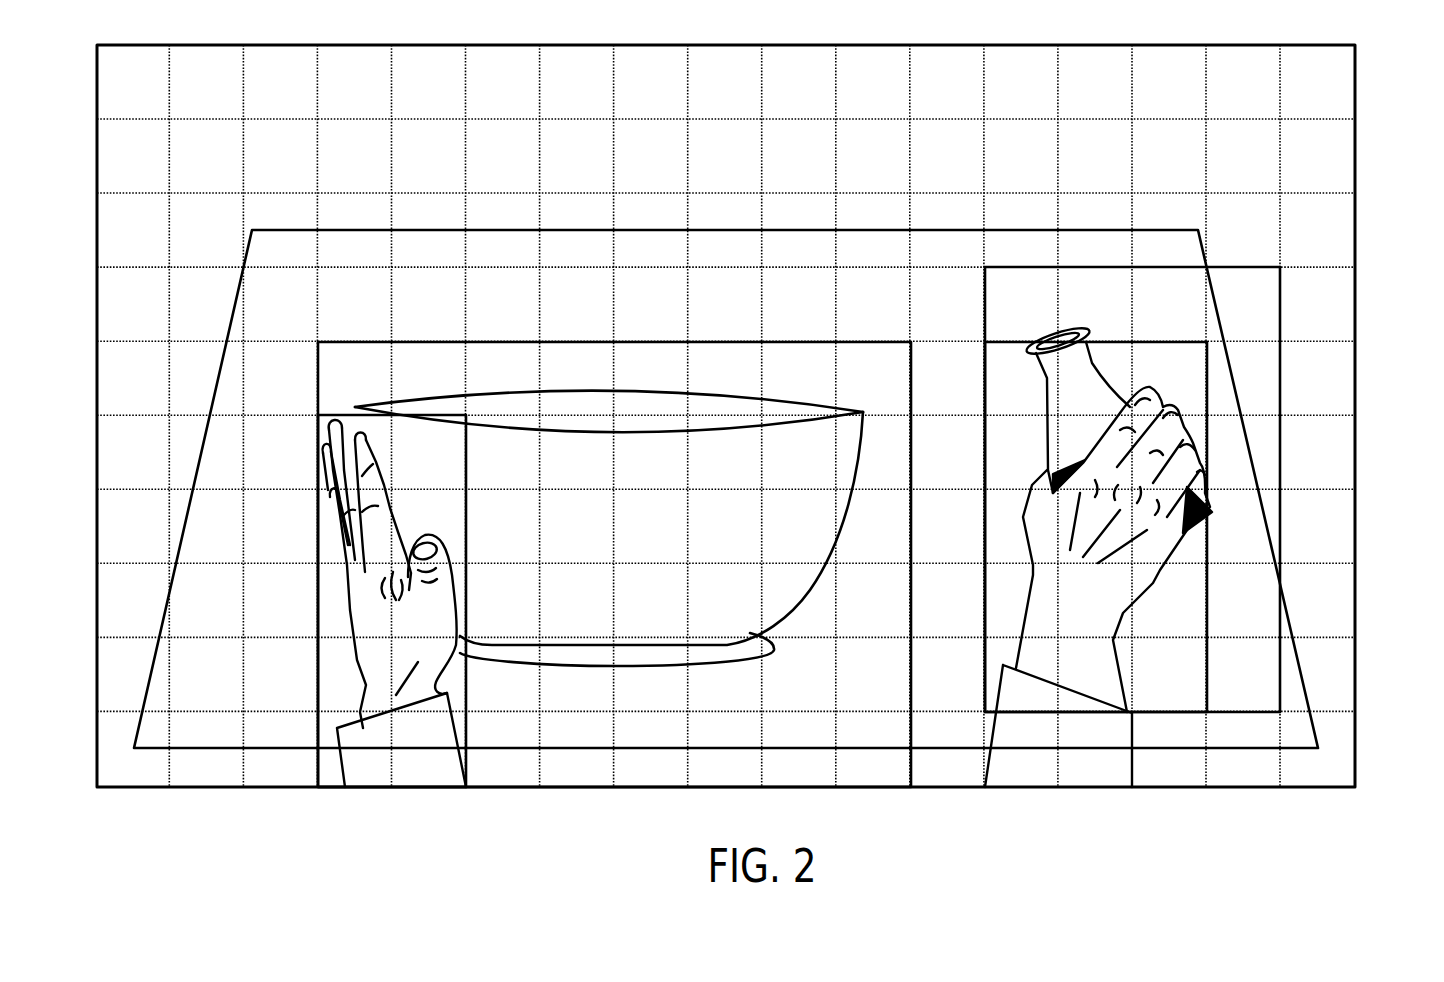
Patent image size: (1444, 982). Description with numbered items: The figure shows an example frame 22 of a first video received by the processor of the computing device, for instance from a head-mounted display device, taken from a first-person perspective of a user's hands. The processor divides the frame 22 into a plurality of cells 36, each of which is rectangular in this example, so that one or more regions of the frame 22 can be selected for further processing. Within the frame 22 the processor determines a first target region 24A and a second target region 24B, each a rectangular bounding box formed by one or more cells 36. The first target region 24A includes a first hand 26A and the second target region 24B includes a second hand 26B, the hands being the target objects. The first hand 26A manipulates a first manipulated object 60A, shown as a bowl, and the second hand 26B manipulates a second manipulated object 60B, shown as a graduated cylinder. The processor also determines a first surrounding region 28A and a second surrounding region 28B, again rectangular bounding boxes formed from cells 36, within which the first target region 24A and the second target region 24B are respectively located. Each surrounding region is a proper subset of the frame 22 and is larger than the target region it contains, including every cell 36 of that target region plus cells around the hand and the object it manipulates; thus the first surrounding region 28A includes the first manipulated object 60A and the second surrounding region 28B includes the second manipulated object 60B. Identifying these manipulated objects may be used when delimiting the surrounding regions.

The frame 22 is at (1355, 82).
The cell 36 is at (169, 156).
The first surrounding region 28A is at (430, 341).
The first target region 24A is at (466, 525).
The first hand 26A is at (354, 626).
The first manipulated object 60A is at (813, 578).
The second surrounding region 28B is at (1282, 488).
The second target region 24B is at (1170, 341).
The second hand 26B is at (1117, 653).
The second manipulated object 60B is at (1045, 395).